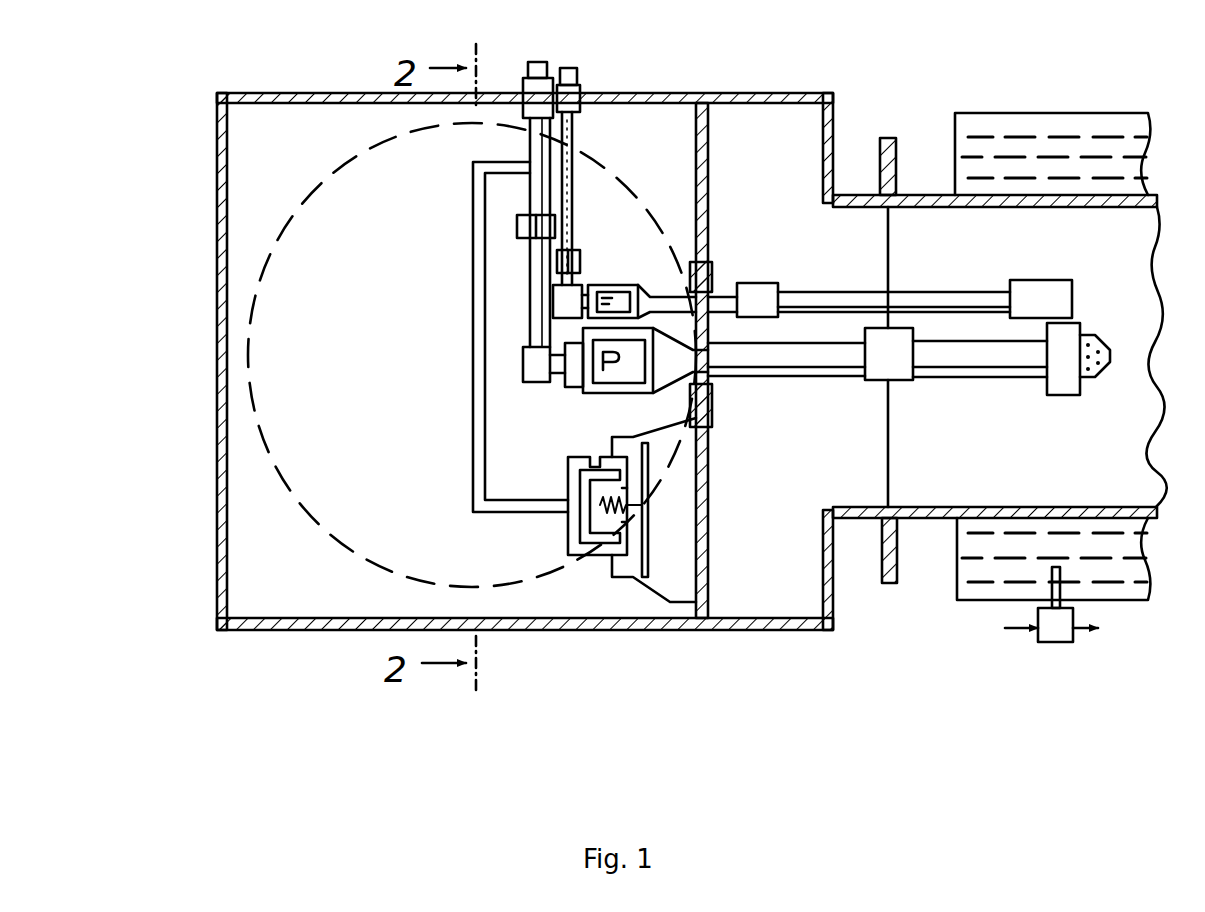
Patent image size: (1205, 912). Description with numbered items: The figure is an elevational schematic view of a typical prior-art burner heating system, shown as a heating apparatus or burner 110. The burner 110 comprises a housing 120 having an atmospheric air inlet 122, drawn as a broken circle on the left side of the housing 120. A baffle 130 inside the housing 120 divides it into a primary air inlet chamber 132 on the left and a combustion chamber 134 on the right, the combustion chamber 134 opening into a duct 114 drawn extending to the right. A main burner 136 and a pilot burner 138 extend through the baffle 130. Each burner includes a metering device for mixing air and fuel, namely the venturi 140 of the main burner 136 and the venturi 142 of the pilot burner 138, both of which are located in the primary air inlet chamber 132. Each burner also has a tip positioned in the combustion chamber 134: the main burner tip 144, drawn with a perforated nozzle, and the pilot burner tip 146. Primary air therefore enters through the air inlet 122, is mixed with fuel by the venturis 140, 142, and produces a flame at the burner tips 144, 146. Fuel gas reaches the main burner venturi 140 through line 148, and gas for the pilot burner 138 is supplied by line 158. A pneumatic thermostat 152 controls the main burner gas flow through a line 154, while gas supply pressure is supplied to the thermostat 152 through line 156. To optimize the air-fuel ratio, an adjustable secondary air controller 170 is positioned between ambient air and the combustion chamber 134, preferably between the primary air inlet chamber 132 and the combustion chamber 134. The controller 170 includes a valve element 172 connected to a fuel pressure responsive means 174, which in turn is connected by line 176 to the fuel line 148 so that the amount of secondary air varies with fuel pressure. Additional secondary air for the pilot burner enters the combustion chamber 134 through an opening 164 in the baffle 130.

The burner 110 is at (680, 90).
The tube 114 is at (922, 193).
The housing 120 is at (217, 197).
The atmospheric air inlet 122 is at (272, 262).
The baffle 130 is at (709, 145).
The primary air inlet chamber 132 is at (256, 540).
The combustion chamber 134 is at (762, 596).
The main burner 136 is at (757, 377).
The pilot burner 138 is at (734, 288).
The venturi 140 is at (678, 373).
The venturi 142 is at (660, 290).
The burner tip 144 is at (1095, 372).
The burner tip 146 is at (1057, 280).
The line 148 is at (530, 70).
The pneumatic thermostat 152 is at (1056, 643).
The line 154 is at (1006, 629).
The line 156 is at (1096, 635).
The line 158 is at (575, 78).
The opening 164 is at (712, 386).
The secondary air controller 170 is at (652, 600).
The valve 172 is at (648, 548).
The fuel pressure responsive means 174 is at (583, 527).
The line 176 is at (473, 391).